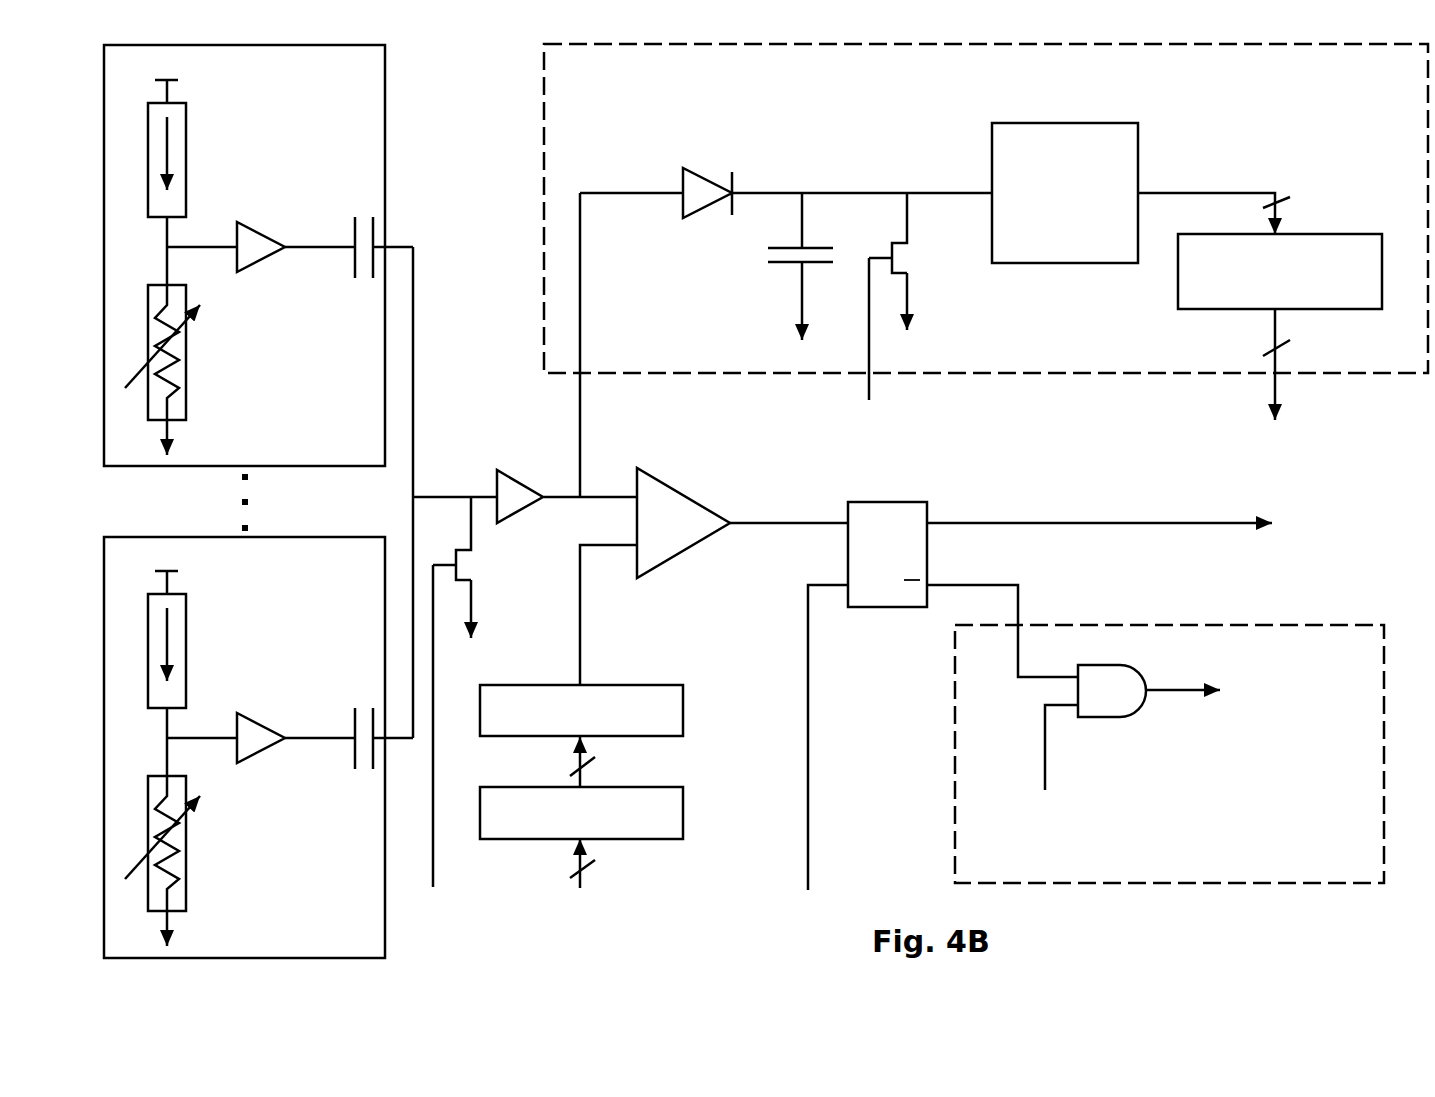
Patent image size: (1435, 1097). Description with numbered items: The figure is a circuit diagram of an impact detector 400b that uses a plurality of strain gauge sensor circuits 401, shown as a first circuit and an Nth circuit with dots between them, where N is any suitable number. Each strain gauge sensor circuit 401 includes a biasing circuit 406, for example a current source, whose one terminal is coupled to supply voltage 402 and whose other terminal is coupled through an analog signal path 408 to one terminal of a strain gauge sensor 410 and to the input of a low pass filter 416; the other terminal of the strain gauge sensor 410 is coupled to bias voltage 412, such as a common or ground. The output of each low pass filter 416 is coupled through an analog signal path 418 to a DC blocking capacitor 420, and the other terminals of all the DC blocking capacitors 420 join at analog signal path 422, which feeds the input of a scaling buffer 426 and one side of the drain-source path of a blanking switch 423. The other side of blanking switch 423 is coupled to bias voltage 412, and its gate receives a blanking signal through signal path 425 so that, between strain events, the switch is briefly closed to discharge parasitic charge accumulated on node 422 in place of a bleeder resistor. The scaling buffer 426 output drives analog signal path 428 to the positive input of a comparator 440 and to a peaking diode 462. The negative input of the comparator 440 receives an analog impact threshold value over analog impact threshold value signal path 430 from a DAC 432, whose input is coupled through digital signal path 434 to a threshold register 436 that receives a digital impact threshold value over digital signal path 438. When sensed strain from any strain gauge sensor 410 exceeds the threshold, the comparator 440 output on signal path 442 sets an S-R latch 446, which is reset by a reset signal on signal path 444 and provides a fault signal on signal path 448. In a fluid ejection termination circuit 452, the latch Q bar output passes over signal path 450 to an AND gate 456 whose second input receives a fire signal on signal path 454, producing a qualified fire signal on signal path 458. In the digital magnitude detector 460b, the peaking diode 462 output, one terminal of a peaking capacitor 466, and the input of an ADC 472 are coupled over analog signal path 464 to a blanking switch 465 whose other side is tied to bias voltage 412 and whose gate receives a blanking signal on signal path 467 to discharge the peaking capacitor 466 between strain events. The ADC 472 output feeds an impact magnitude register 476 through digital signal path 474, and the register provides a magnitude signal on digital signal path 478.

The impact detector 400b is at (498, 84).
The strain gauge sensor circuit 401 is at (390, 154).
The supply voltage 402 is at (172, 83).
The biasing circuit 406 is at (186, 157).
The analog signal path 408 is at (170, 244).
The strain gauge sensor 410 is at (186, 363).
The bias voltage 412 is at (172, 451).
The low pass filter 416 is at (245, 224).
The analog signal path 418 is at (340, 249).
The DC blocking capacitor 420 is at (350, 229).
The analog signal path 422 is at (420, 496).
The blanking switch 423 is at (462, 578).
The signal path 425 is at (435, 666).
The scaling buffer 426 is at (505, 473).
The analog signal path 428 is at (582, 452).
The analog impact threshold value signal path 430 is at (607, 545).
The digital to analog converter 432 is at (500, 684).
The digital signal path 434 is at (586, 773).
The threshold register 436 is at (505, 786).
The digital signal path 438 is at (586, 876).
The comparator 440 is at (668, 487).
The signal path 442 is at (770, 522).
The signal path 444 is at (808, 668).
The set-reset latch 446 is at (890, 501).
The signal path 448 is at (1037, 522).
The signal path 450 is at (1005, 584).
The fluid ejection termination circuit 452 is at (1220, 620).
The signal path 454 is at (1047, 780).
The AND gate 456 is at (1092, 664).
The signal path 458 is at (1163, 688).
The digital magnitude detector 460b is at (542, 208).
The peaking diode 462 is at (695, 170).
The analog signal path 464 is at (787, 193).
The blanking switch 465 is at (902, 273).
The peaking capacitor 466 is at (812, 247).
The signal path 467 is at (871, 366).
The analog to digital converter 472 is at (1125, 124).
The digital signal path 474 is at (1190, 193).
The impact magnitude register 476 is at (1318, 235).
The digital signal path 478 is at (1280, 360).